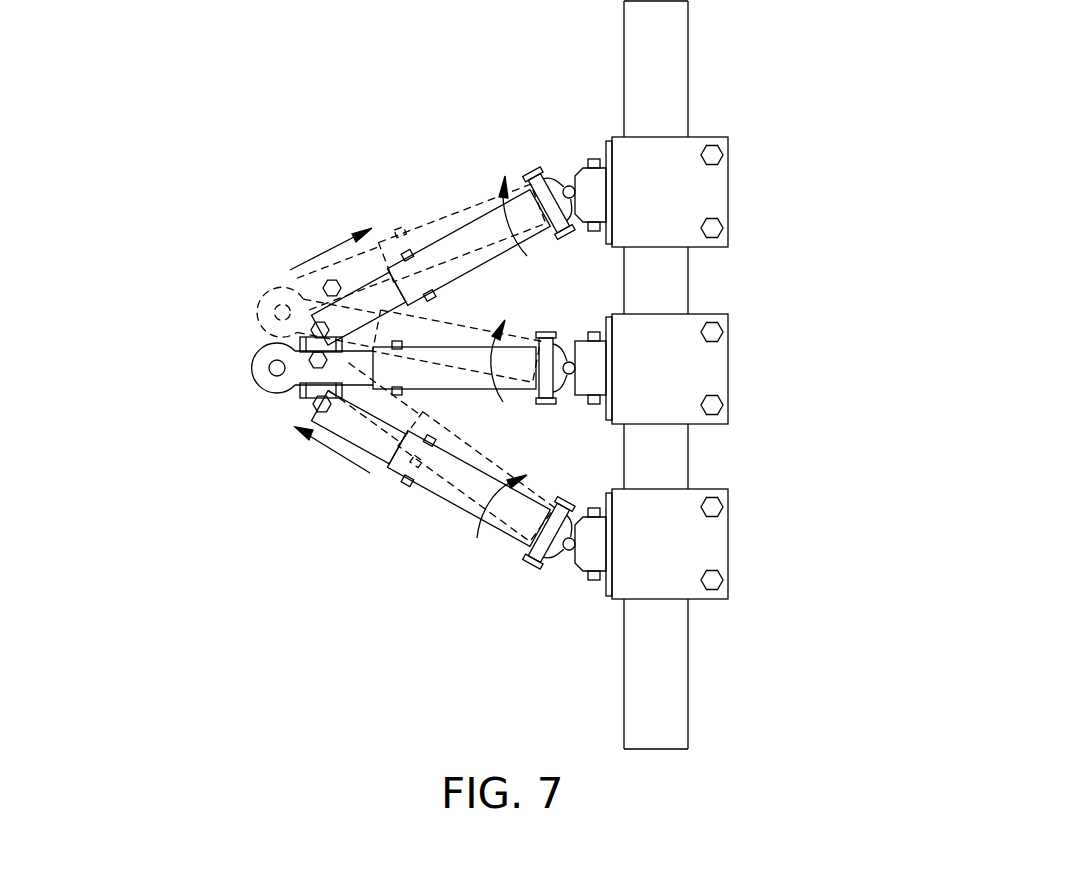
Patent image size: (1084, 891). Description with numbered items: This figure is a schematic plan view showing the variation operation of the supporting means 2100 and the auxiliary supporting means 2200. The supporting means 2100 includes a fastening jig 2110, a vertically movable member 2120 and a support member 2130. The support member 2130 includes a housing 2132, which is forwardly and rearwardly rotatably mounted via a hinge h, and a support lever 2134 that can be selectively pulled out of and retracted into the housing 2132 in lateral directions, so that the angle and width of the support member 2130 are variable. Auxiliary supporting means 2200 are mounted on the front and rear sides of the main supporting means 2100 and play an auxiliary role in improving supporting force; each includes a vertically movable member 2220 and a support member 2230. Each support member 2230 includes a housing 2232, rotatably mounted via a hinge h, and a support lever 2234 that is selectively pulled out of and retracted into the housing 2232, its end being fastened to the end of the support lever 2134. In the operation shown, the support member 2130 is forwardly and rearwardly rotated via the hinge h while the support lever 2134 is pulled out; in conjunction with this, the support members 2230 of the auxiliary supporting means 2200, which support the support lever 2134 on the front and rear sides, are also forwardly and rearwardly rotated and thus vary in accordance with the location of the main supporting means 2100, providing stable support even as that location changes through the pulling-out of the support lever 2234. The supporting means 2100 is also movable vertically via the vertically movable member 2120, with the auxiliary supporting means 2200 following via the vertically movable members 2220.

The supporting means 2100 is at (761, 348).
The fastening jig 2110 is at (728, 389).
The vertically movable member 2120 is at (585, 333).
The support member 2130 is at (192, 355).
The housing 2132 is at (320, 422).
The support lever 2134 is at (252, 367).
The auxiliary supporting means 2200 is at (738, 383).
The vertically movable member 2220 is at (581, 167).
The support member 2230 is at (430, 358).
The housing 2232 is at (459, 226).
The support lever 2234 is at (318, 333).
The hinge h is at (575, 340).